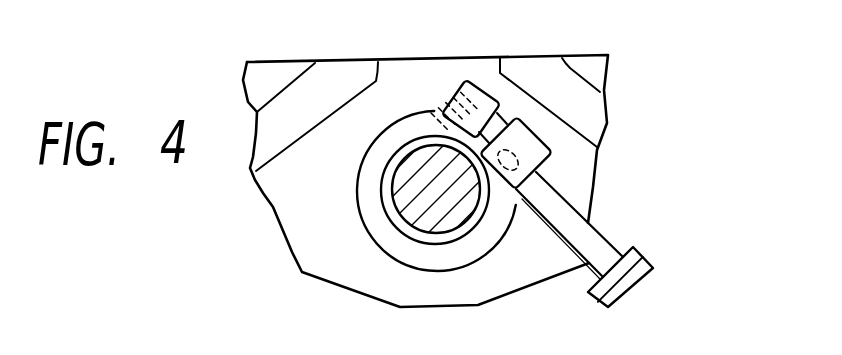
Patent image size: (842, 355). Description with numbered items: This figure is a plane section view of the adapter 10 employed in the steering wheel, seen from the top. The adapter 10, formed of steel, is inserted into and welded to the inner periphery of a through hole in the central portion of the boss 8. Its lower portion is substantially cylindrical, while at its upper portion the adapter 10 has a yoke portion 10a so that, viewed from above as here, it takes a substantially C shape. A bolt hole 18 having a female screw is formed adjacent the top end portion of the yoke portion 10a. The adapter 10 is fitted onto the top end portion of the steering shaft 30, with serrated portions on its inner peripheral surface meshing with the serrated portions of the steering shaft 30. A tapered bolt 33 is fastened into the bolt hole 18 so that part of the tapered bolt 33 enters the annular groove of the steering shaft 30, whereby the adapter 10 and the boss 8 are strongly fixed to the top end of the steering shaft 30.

The boss 8 is at (584, 192).
The adapter 10 is at (374, 256).
The yoke portion 10a is at (467, 83).
The bolt hole 18 is at (520, 153).
The steering shaft 30 is at (389, 188).
The tapered bolt 33 is at (651, 263).